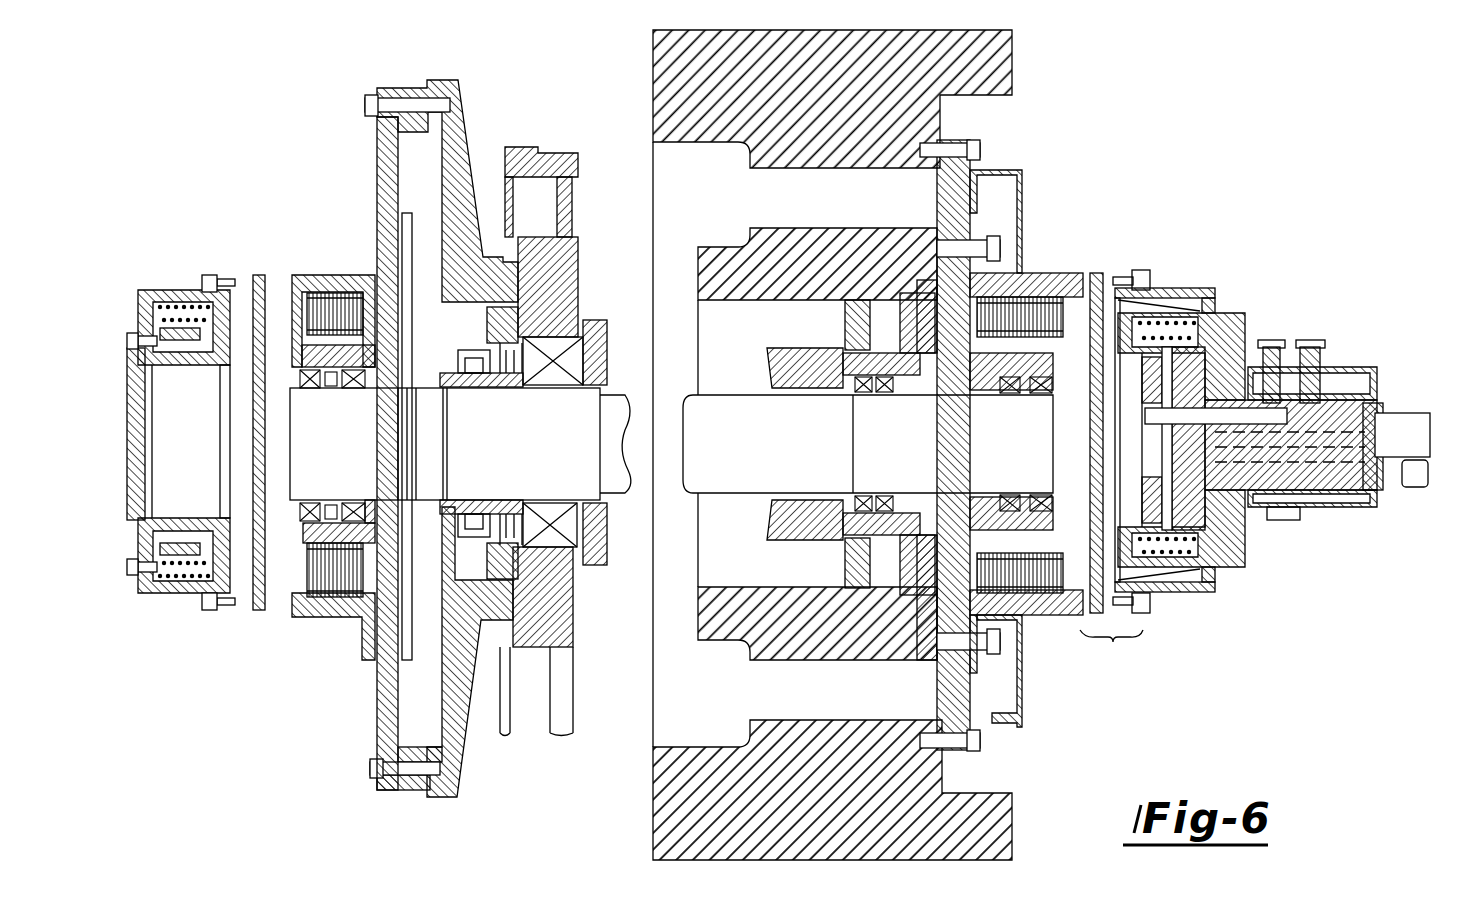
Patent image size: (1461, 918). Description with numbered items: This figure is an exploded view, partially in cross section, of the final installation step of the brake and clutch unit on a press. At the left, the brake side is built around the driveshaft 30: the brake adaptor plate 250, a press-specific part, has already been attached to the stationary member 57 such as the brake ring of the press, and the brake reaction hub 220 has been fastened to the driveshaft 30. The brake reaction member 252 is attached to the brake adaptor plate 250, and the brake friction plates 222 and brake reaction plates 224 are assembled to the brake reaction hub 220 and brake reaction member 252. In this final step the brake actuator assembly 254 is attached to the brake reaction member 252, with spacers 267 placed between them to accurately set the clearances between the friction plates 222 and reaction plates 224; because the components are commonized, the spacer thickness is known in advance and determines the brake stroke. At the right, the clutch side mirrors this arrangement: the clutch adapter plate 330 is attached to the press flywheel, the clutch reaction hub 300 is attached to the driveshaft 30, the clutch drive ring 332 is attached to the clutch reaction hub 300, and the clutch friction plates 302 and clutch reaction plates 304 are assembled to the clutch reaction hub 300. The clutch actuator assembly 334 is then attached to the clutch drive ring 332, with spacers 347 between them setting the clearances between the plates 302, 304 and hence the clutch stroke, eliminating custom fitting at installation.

The driveshaft 30 is at (520, 471).
The stationary member 57 is at (455, 790).
The brake reaction hub 220 is at (388, 500).
The brake friction plates 222 is at (293, 628).
The brake reaction plates 224 is at (310, 590).
The brake adaptor plate 250 is at (372, 735).
The brake reaction member 252 is at (330, 612).
The brake actuator assembly 254 is at (183, 292).
The spacers 267 is at (259, 277).
The clutch reaction hub 300 is at (965, 495).
The clutch friction plates 302 is at (1060, 293).
The clutch reaction plates 304 is at (1030, 290).
The clutch adapter plate 330 is at (982, 718).
The clutch drive ring 332 is at (1043, 607).
The clutch actuator assembly 334 is at (1215, 292).
The spacers 347 is at (1100, 612).